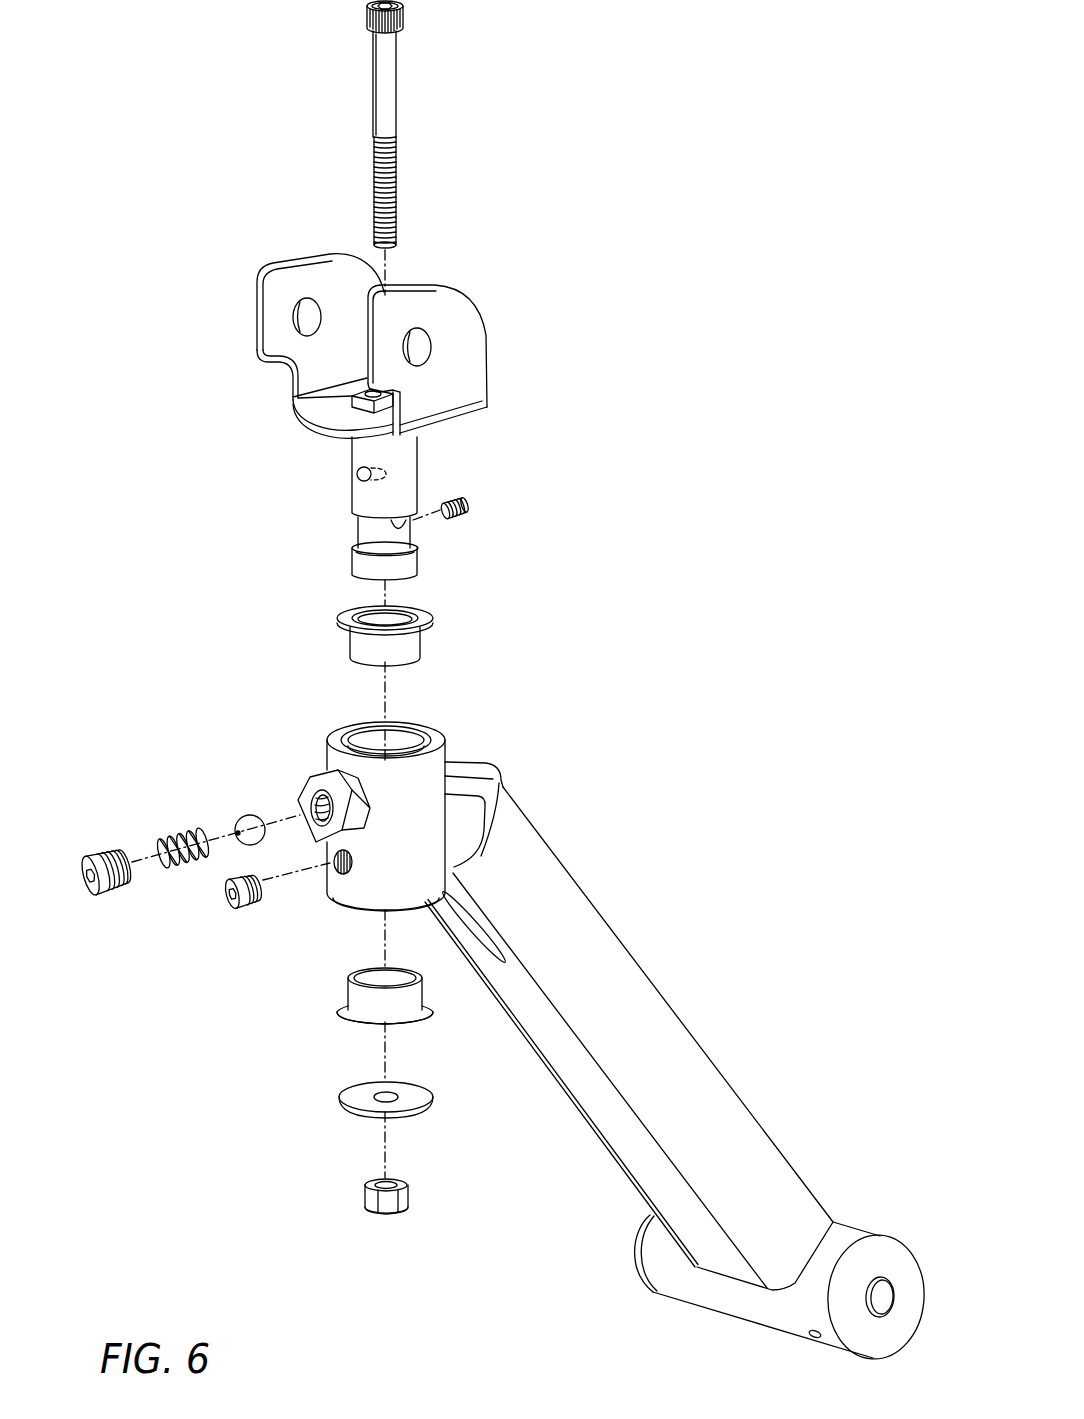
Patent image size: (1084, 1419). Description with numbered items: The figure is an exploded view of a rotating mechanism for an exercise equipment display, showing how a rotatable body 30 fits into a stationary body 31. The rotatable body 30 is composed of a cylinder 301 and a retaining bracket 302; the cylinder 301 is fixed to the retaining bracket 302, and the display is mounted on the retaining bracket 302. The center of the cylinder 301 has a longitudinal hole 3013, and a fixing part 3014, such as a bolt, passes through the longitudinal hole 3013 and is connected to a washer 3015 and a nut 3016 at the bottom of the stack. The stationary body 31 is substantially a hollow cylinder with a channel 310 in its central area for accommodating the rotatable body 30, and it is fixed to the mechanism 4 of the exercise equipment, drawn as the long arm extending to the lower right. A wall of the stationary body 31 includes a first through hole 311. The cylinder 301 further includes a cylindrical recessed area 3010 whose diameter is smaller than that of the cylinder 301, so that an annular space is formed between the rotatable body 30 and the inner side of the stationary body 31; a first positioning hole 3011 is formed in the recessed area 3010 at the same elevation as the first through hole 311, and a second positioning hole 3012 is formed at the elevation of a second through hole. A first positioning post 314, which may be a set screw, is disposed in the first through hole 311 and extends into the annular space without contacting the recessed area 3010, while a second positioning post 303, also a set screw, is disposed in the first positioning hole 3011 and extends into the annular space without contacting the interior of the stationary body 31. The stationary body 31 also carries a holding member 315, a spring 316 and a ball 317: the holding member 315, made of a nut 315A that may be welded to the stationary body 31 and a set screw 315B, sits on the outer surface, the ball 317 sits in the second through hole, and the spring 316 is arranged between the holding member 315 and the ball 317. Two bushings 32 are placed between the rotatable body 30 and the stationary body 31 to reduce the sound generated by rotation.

The mechanism of the exercise equipment 4 is at (691, 1022).
The rotatable body 30 is at (566, 426).
The stationary body 31 is at (466, 737).
The bushing 32 is at (412, 645).
The cylinder 301 is at (408, 465).
The retaining bracket 302 is at (470, 343).
The second positioning post 303 is at (470, 508).
The channel 310 is at (403, 742).
The first through hole 311 is at (337, 863).
The first positioning post 314 is at (238, 903).
The holding member 315 is at (237, 720).
The nut 315A is at (320, 770).
The set screw 315B is at (110, 847).
The spring 316 is at (173, 867).
The ball 317 is at (250, 827).
The recessed area 3010 is at (368, 532).
The first positioning hole 3011 is at (408, 527).
The second positioning hole 3012 is at (357, 476).
The longitudinal hole 3013 is at (363, 376).
The fixing part 3014 is at (387, 77).
The washer 3015 is at (347, 1097).
The nut 3016 is at (363, 1193).